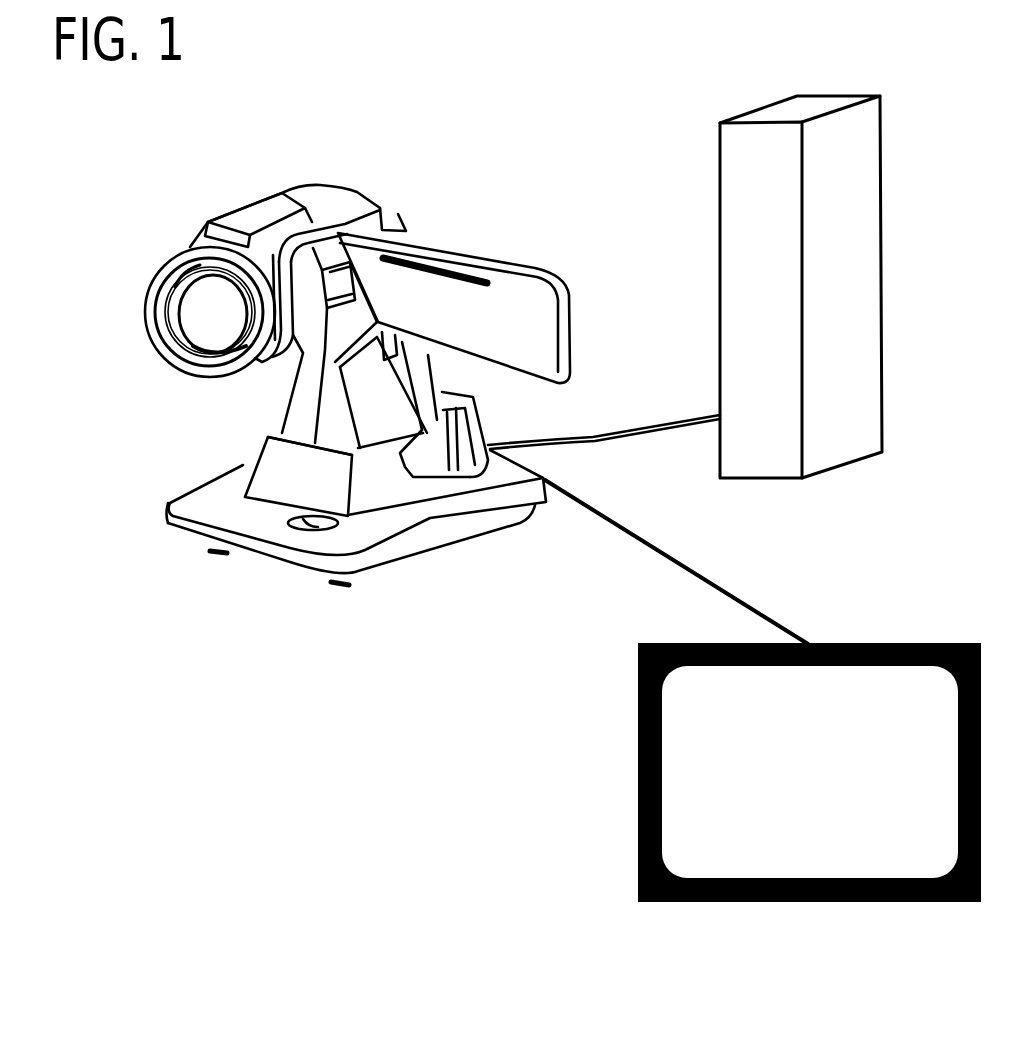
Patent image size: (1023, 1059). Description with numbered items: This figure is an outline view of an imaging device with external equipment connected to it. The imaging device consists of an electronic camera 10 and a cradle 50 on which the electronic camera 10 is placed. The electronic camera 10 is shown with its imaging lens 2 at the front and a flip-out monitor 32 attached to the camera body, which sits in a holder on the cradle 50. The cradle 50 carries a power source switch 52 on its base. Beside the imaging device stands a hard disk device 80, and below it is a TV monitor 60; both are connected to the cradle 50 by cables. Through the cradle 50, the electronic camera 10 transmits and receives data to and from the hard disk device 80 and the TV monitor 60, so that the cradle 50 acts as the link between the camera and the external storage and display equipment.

The electronic camera 10 is at (526, 125).
The imaging lens 2 is at (165, 350).
The monitor 32 is at (535, 268).
The cradle 50 is at (470, 572).
The power source switch 52 is at (303, 530).
The TV monitor 60 is at (893, 643).
The hard disk device 80 is at (882, 185).